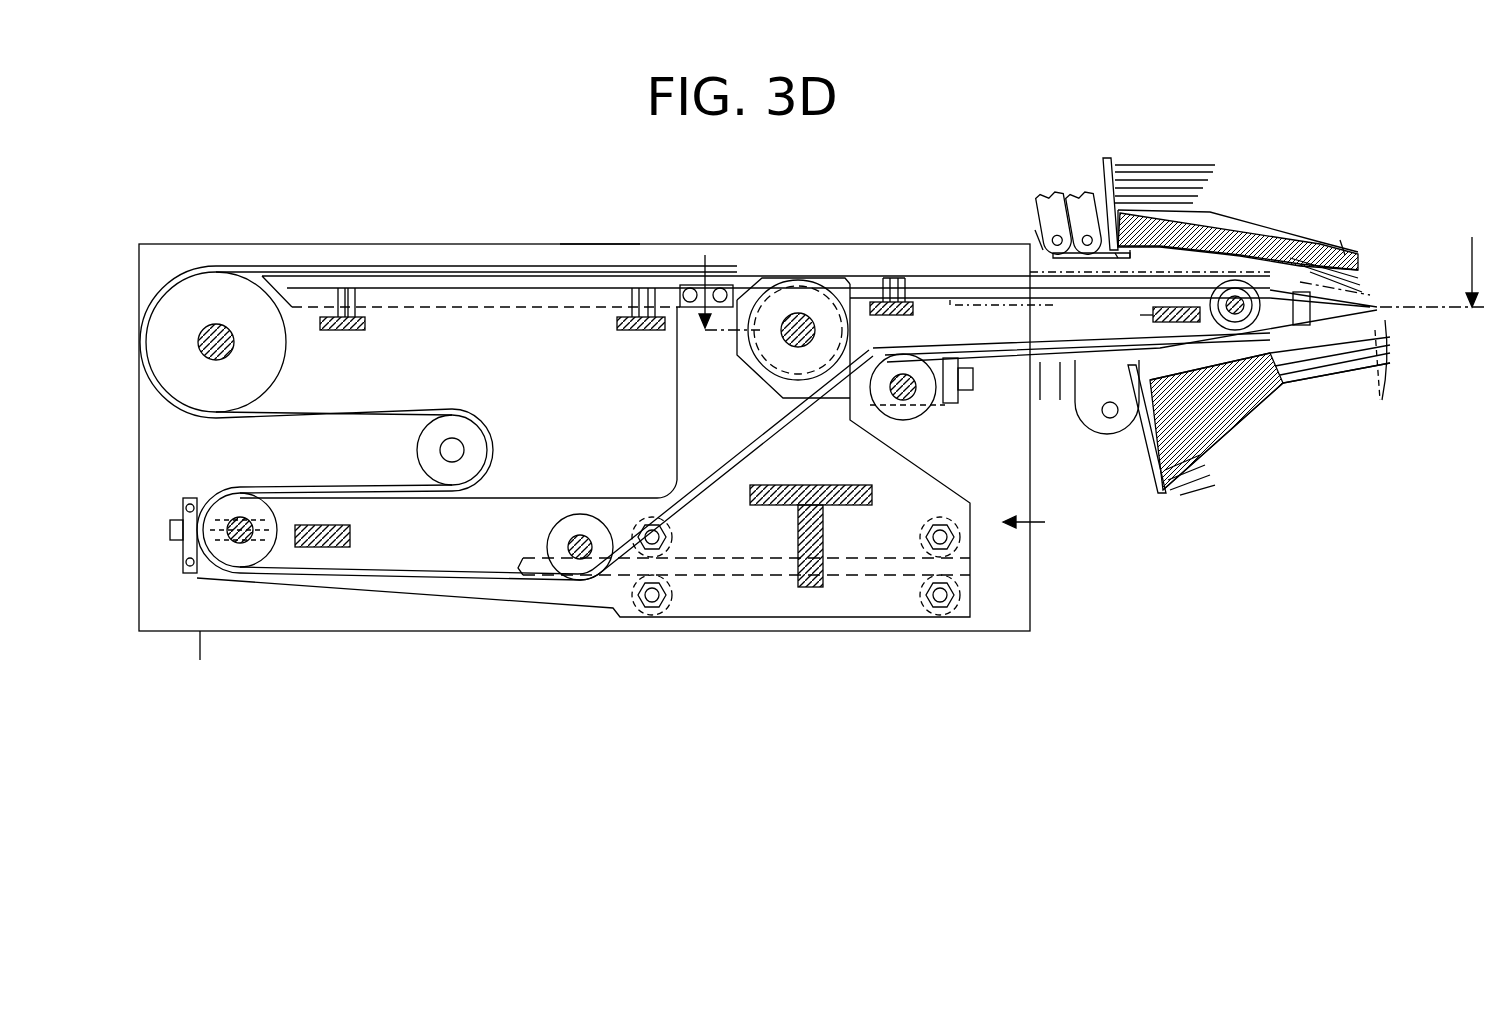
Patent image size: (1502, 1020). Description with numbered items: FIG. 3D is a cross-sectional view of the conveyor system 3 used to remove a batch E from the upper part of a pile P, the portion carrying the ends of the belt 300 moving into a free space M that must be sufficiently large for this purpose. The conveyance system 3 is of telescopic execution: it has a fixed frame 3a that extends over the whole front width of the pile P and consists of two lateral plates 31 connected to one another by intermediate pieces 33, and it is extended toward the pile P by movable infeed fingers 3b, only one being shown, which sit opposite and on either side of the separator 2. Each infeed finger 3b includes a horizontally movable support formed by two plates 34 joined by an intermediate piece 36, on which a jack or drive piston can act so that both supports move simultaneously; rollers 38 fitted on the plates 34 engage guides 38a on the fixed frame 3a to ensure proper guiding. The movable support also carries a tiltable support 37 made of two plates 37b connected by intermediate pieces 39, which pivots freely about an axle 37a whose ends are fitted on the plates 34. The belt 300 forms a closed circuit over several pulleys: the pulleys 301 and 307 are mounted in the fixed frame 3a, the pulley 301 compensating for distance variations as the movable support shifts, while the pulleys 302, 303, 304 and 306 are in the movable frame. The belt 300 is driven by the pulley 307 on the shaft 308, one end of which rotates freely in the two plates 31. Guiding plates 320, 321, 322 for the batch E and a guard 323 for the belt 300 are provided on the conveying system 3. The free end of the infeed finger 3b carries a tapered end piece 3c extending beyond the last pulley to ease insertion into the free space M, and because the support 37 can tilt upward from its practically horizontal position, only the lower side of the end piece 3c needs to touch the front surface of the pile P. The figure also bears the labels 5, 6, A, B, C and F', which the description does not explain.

The separator 2 is at (1112, 162).
The conveyor system 3 is at (598, 243).
The fixed frame 3a is at (215, 640).
The infeed finger 3b is at (1003, 375).
The end piece 3c is at (1380, 302).
The lever 5 is at (1122, 440).
The bolts 6 is at (1050, 245).
The lateral plates 31 is at (312, 634).
The intermediate pieces 33 is at (342, 330).
The plates 34 is at (895, 512).
The intermediate piece 36 is at (812, 588).
The tiltable support 37 is at (800, 398).
The axle 37a is at (799, 315).
The plates 37b is at (1071, 327).
The rollers 38 is at (680, 605).
The guides 38a is at (995, 568).
The intermediate pieces 39 is at (880, 278).
The belt 300 is at (352, 275).
The pulley 301 is at (460, 424).
The pulley 302 is at (232, 505).
The pulley 303 is at (572, 524).
The pulley 304 is at (858, 415).
The pulley 306 is at (770, 300).
The drive pulley 307 is at (196, 286).
The shaft 308 is at (218, 328).
The guiding plate 320 is at (422, 285).
The guiding plate 321 is at (503, 288).
The guiding plate 322 is at (957, 278).
The guard 323 is at (1055, 362).
The direction A is at (1037, 509).
The plate B is at (1160, 495).
The section line C is at (1089, 286).
The batch E is at (1290, 210).
The tape F' is at (1332, 382).
The free space M is at (1332, 348).
The pile P is at (1262, 452).